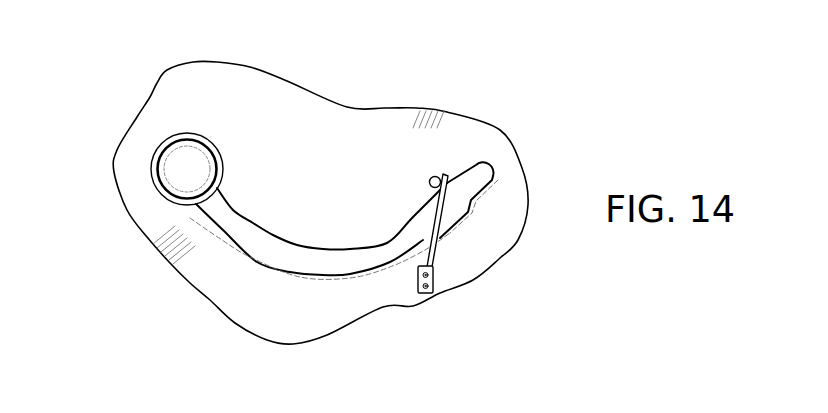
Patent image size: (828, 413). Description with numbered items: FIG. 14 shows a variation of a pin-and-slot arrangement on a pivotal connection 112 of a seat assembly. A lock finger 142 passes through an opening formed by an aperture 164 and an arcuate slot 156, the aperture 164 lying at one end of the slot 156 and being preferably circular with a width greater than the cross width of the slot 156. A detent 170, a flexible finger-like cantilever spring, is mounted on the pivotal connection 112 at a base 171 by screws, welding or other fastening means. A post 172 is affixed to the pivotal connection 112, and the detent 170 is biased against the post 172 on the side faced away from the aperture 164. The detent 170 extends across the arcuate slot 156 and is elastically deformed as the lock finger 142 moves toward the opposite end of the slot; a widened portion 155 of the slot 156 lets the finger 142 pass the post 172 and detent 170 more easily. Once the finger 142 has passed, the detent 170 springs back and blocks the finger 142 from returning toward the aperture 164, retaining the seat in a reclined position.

The pivotal connection 112 is at (283, 88).
The lock finger 142 is at (168, 136).
The widened portion 155 is at (468, 218).
The arcuate slot 156 is at (257, 262).
The aperture 164 is at (187, 133).
The detent 170 is at (438, 224).
The base 171 is at (426, 296).
The post 172 is at (435, 176).